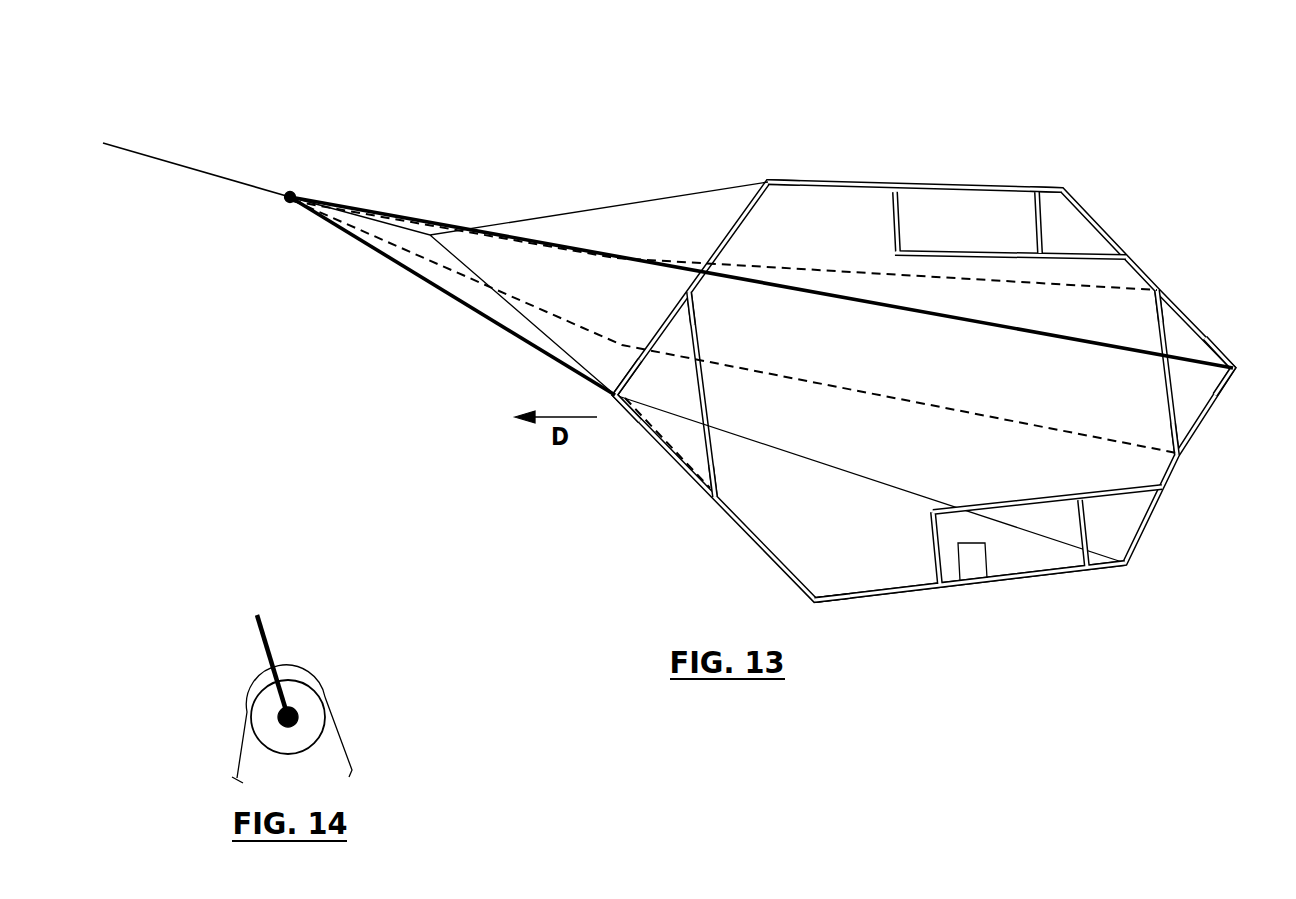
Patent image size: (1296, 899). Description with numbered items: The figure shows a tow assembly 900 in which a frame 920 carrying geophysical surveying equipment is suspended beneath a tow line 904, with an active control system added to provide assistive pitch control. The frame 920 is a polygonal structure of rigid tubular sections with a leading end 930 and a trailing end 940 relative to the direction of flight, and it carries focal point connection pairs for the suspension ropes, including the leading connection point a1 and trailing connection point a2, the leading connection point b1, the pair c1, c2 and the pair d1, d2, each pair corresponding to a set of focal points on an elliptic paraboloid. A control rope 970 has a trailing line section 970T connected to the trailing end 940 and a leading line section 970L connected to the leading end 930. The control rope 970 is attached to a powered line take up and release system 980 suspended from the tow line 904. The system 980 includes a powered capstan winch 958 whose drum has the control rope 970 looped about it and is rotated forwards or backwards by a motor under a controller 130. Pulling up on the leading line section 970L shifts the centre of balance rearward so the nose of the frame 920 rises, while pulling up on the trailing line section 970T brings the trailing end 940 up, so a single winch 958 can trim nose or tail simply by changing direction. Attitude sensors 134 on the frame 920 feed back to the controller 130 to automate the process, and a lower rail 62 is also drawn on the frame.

In FIG. 13, the tow assembly 900 is at (1160, 205).
In FIG. 13, the frame 920 is at (958, 186).
In FIG. 13, the lower frame rail 62 is at (1089, 568).
In FIG. 13, the attitude sensors 134 is at (972, 556).
In FIG. 13, the leading connection point a1 is at (800, 184).
In FIG. 13, the trailing connection point a2 is at (1050, 192).
In FIG. 13, the connection point c1 is at (704, 292).
In FIG. 13, the connection point c2 is at (1160, 292).
In FIG. 13, the connection point d1 is at (694, 481).
In FIG. 13, the connection point d2 is at (1179, 460).
In FIG. 13, the leading connection point b1 is at (848, 597).
In FIG. 13, the trailing end 940 is at (1236, 367).
In FIG. 13, the leading end 930 is at (616, 404).
In FIG. 13, the control rope 970 is at (412, 213).
In FIG. 14, the control rope 970 is at (240, 751).
In FIG. 13, the trailing line section 970T is at (967, 322).
In FIG. 13, the leading line section 970L is at (506, 329).
In FIG. 13, the tow line 904 is at (200, 172).
In FIG. 14, the tow line 904 is at (277, 663).
In FIG. 13, the powered line take up and release system 980 is at (294, 192).
In FIG. 14, the powered line take up and release system 980 is at (370, 700).
In FIG. 14, the powered capstan winch 958 is at (307, 697).
In FIG. 14, the controller 130 is at (275, 700).